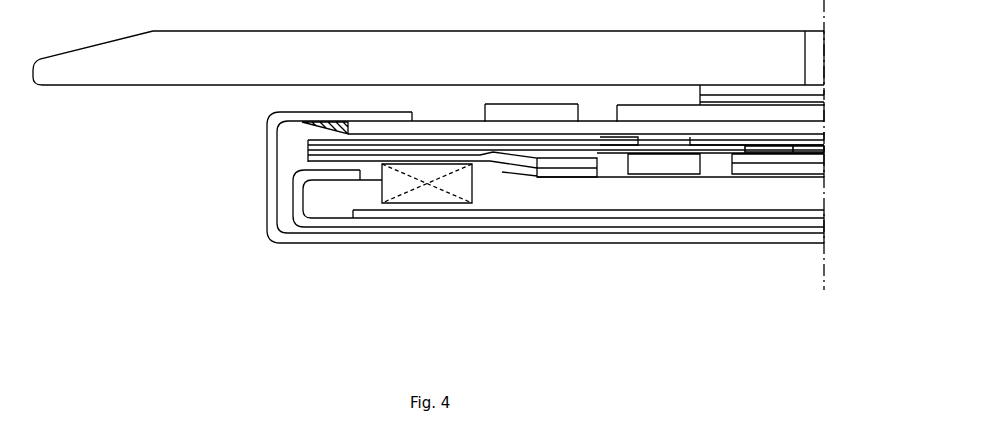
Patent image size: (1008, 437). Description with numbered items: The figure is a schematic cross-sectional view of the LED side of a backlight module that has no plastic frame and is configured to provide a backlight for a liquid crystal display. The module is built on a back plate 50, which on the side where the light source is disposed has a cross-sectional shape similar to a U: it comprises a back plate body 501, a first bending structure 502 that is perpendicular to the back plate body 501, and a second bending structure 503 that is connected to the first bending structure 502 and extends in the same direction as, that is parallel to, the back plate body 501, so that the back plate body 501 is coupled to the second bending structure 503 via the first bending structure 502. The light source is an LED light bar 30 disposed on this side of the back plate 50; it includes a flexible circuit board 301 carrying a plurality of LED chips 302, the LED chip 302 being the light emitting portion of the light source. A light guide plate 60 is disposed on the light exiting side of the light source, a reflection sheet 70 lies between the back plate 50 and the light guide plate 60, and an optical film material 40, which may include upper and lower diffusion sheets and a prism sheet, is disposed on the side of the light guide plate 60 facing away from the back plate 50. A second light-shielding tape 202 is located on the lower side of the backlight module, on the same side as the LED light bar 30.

The back plate 50 is at (148, 172).
The back plate body 501 is at (327, 225).
The first bending structure 502 is at (293, 208).
The second bending structure 503 is at (332, 175).
The LED light bar 30 is at (522, 283).
The flexible circuit board 301 is at (482, 155).
The LED chip 302 is at (428, 182).
The second light-shielding tape 202 is at (745, 149).
The optical film material 40 is at (747, 168).
The light guide plate 60 is at (748, 193).
The reflection sheet 70 is at (750, 214).